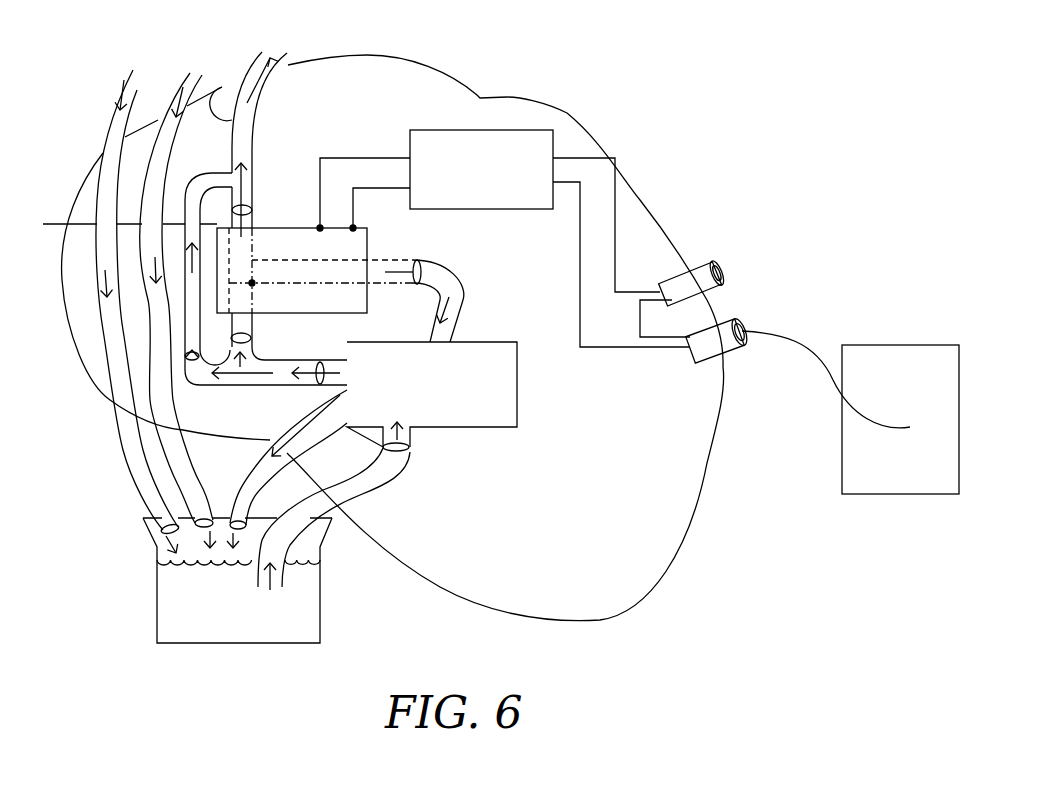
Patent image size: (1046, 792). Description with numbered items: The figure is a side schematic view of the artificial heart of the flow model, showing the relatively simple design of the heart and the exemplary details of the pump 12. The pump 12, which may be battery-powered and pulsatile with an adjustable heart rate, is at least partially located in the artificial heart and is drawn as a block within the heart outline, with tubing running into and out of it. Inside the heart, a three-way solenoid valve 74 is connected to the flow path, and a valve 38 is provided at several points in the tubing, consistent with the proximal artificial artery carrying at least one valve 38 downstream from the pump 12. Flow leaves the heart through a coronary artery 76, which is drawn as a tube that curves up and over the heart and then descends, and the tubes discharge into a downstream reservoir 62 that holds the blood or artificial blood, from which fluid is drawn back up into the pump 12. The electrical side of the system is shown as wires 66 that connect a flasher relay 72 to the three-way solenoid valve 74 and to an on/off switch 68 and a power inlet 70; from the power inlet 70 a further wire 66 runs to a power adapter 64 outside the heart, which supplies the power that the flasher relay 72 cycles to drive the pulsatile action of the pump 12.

The pump 12 is at (508, 393).
The valve 38 is at (418, 262).
The downstream reservoir 62 is at (178, 600).
The power adapter 64 is at (925, 483).
The wires 66 is at (615, 188).
The on/off switch 68 is at (713, 257).
The power inlet 70 is at (713, 343).
The flasher relay 72 is at (513, 130).
The 3 way solenoid valve 74 is at (267, 228).
The coronary artery 76 is at (220, 88).